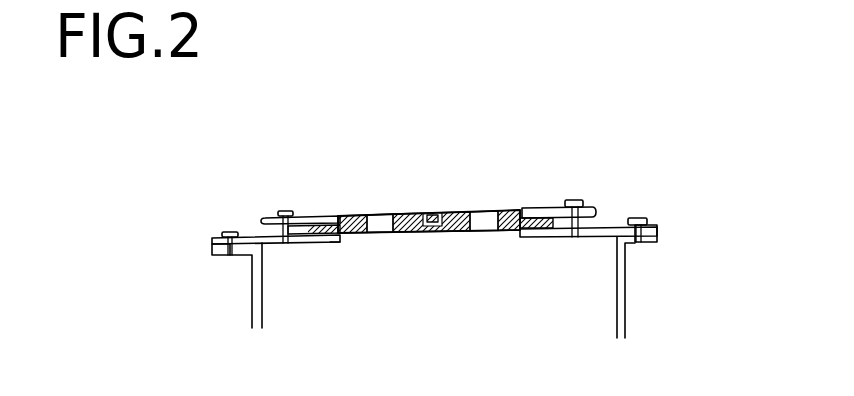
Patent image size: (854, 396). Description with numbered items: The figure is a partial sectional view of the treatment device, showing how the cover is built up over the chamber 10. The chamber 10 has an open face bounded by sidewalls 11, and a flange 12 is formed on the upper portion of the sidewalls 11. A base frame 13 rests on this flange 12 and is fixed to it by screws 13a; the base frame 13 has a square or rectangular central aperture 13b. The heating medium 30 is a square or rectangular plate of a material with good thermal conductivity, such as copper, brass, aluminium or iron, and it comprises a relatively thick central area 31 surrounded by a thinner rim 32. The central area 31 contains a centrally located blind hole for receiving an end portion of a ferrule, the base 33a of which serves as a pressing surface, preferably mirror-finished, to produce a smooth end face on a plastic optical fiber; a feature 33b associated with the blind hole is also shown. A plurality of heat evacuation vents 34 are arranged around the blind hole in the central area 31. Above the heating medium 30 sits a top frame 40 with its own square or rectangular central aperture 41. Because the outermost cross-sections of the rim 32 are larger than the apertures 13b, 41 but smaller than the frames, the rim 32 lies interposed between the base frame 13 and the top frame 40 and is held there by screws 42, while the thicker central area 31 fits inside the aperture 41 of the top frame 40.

The chamber 10 is at (438, 316).
The sidewalls 11 is at (254, 287).
The flange 12 is at (237, 258).
The base frame 13 is at (608, 228).
The screws 13a is at (230, 231).
The central aperture of base frame 13b is at (340, 241).
The heating medium 30 is at (432, 223).
The central area 31 is at (405, 236).
The rim 32 is at (533, 238).
The base of blind hole 33a is at (427, 212).
The projection 33b is at (432, 212).
The heat evacuation vents 34 is at (375, 215).
The top frame 40 is at (550, 207).
The central aperture of top frame 41 is at (340, 215).
The screws 42 is at (277, 210).